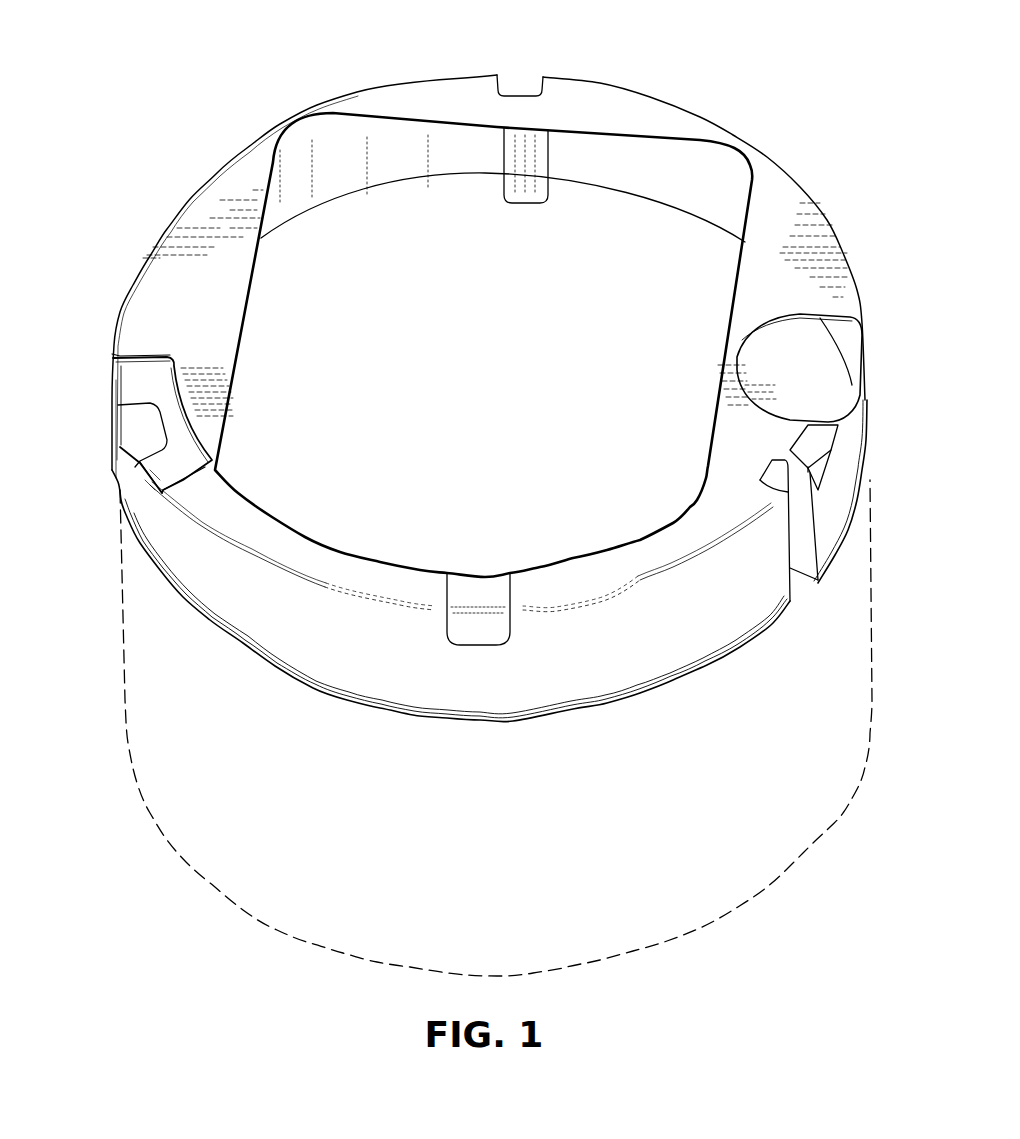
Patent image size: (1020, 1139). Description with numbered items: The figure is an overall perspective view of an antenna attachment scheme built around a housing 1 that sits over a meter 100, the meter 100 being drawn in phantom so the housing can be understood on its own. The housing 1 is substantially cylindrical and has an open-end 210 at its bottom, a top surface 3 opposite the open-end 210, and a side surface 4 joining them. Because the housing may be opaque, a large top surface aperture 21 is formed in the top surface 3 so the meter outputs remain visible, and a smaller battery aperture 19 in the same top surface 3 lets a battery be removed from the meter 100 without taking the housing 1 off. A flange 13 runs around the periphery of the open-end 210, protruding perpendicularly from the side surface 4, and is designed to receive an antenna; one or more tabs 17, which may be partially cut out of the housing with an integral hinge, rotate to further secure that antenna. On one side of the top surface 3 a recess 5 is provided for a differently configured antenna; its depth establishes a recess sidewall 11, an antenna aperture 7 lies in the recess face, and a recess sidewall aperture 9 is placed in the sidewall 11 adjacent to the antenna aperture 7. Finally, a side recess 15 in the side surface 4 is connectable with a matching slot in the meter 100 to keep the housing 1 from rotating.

The housing 1 is at (775, 99).
The top surface 3 is at (196, 280).
The side surface 4 is at (613, 653).
The recess 5 is at (190, 458).
The antenna aperture 7 is at (142, 428).
The recess sidewall aperture 9 is at (148, 358).
The recess sidewall 11 is at (118, 358).
The flange 13 is at (846, 522).
The side recess 15 is at (519, 92).
The tab 17 is at (822, 456).
The battery aperture 19 is at (783, 372).
The top surface aperture 21 is at (499, 347).
The meter 100 is at (813, 847).
The open-end 210 is at (134, 540).